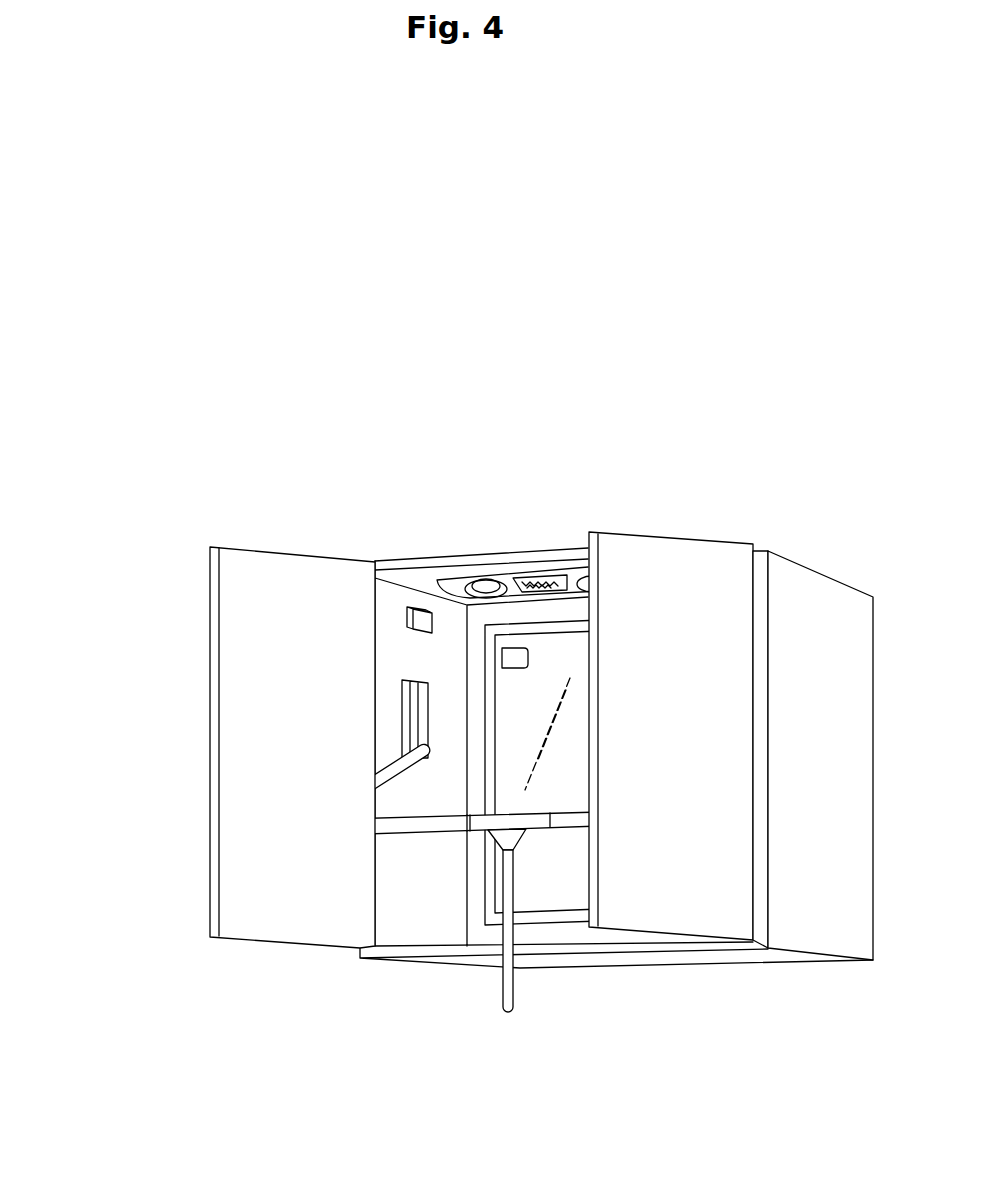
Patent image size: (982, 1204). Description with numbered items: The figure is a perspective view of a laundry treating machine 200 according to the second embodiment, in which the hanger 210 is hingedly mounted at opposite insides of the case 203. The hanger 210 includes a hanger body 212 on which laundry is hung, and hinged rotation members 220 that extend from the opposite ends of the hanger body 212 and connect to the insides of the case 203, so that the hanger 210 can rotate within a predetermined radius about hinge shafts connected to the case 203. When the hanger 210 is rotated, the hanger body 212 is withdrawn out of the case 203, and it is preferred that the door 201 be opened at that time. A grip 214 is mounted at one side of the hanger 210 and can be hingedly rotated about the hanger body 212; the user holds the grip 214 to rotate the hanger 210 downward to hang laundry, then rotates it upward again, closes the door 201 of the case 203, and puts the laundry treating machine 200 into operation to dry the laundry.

The laundry treating machine 200 is at (476, 739).
The door 201 is at (250, 658).
The case 203 is at (402, 563).
The hanger 210 is at (351, 895).
The hanger body 212 is at (418, 823).
The grip 214 is at (510, 982).
The hinged rotation member 220 is at (345, 802).